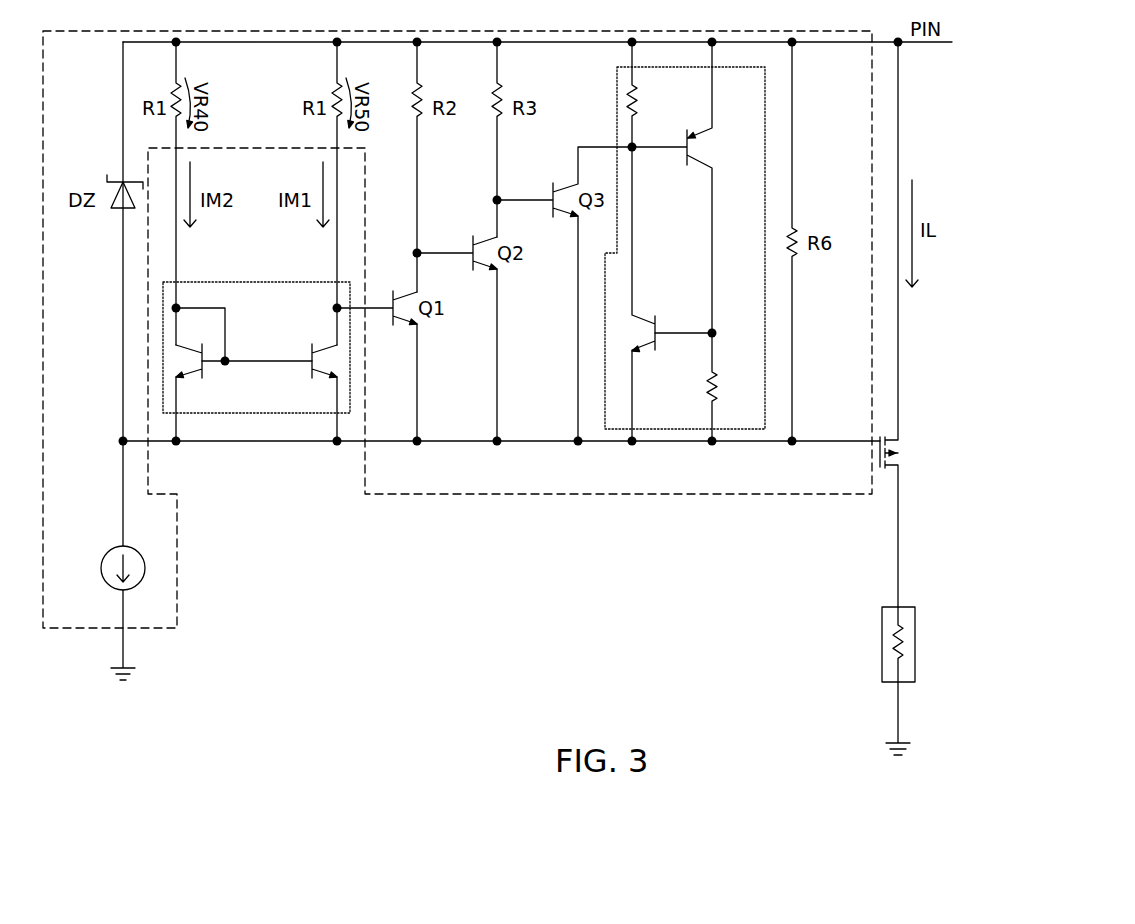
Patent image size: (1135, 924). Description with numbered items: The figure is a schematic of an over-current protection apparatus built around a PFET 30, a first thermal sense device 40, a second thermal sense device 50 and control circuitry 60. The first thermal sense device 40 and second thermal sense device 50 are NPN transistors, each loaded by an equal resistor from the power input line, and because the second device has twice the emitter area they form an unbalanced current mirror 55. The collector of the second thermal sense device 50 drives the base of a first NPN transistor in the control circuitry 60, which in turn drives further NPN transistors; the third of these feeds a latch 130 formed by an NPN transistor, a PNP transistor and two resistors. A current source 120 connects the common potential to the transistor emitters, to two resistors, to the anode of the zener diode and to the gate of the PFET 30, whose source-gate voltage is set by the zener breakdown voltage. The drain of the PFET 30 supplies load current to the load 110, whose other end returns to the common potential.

The PFET 30 is at (909, 457).
The first thermal sense device 40 is at (207, 372).
The second thermal sense device 50 is at (309, 372).
The unbalanced current mirror 55 is at (256, 342).
The control circuitry 60 is at (737, 494).
The load 110 is at (882, 655).
The current source 120 is at (102, 572).
The latch 130 is at (765, 254).